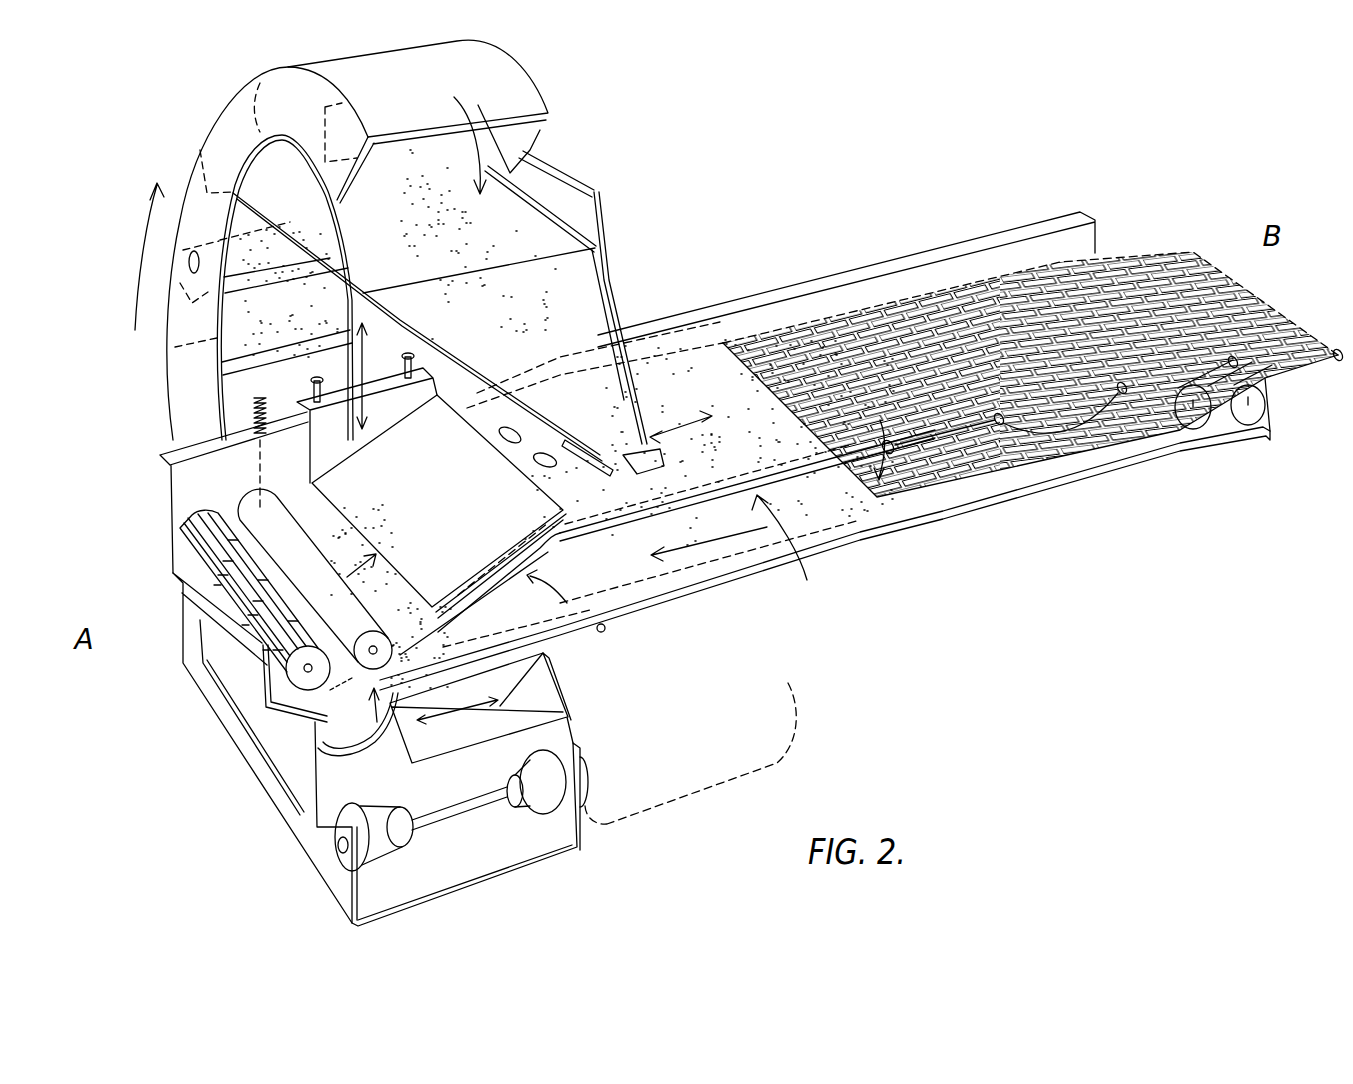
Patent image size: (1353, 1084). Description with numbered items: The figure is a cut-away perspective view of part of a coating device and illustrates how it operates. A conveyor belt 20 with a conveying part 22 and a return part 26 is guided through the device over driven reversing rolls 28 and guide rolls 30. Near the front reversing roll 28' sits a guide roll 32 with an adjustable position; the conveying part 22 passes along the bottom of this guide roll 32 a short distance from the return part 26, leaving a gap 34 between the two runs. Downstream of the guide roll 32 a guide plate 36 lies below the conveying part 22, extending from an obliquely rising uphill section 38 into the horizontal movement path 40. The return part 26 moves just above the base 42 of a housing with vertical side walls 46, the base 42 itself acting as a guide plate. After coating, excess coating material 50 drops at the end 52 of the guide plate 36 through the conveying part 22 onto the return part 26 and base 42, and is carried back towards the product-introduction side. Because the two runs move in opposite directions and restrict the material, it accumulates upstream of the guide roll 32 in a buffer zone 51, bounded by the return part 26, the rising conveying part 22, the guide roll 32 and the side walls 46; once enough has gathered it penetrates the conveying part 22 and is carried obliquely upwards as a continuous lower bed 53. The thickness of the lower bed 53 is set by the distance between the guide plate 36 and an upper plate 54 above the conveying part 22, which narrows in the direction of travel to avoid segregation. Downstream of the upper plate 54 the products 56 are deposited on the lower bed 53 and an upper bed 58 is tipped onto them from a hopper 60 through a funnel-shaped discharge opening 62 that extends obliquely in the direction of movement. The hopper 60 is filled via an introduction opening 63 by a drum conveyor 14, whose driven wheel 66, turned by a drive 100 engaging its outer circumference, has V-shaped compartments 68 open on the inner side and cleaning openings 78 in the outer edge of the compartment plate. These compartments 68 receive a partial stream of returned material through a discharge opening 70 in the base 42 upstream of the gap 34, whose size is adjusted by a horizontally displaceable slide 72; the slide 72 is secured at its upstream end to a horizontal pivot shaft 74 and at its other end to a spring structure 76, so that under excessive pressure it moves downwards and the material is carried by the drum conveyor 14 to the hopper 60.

The drum conveyor 14 is at (152, 141).
The conveyor belt 20 is at (205, 533).
The conveying part 22 is at (827, 337).
The return part 26 is at (1000, 475).
The reversing rolls 28 is at (1223, 440).
The front reversing roll 28' is at (225, 620).
The guide rolls 30 is at (1233, 370).
The guide roll 32 is at (277, 548).
The gap 34 is at (352, 715).
The guide plate 36 is at (620, 518).
The uphill section 38 is at (553, 607).
The horizontal movement path 40 is at (744, 552).
The base 42 is at (877, 535).
The side walls 46 is at (183, 478).
The coating material 50 is at (392, 765).
The buffer zone 51 is at (470, 665).
The end of the guide plate 52 is at (895, 455).
The lower bed 53 is at (542, 656).
The upper plate 54 is at (439, 503).
The products 56 is at (535, 462).
The upper bed 58 is at (704, 367).
The hopper 60 is at (587, 272).
The discharge opening 62 is at (612, 455).
The introduction opening 63 is at (517, 190).
The driven wheel 66 is at (215, 122).
The compartments 68 is at (222, 343).
The discharge opening 70 is at (373, 713).
The slide 72 is at (452, 650).
The pivot shaft 74 is at (607, 630).
The spring structure 76 is at (256, 415).
The cleaning openings 78 is at (190, 256).
The drive 100 is at (590, 778).